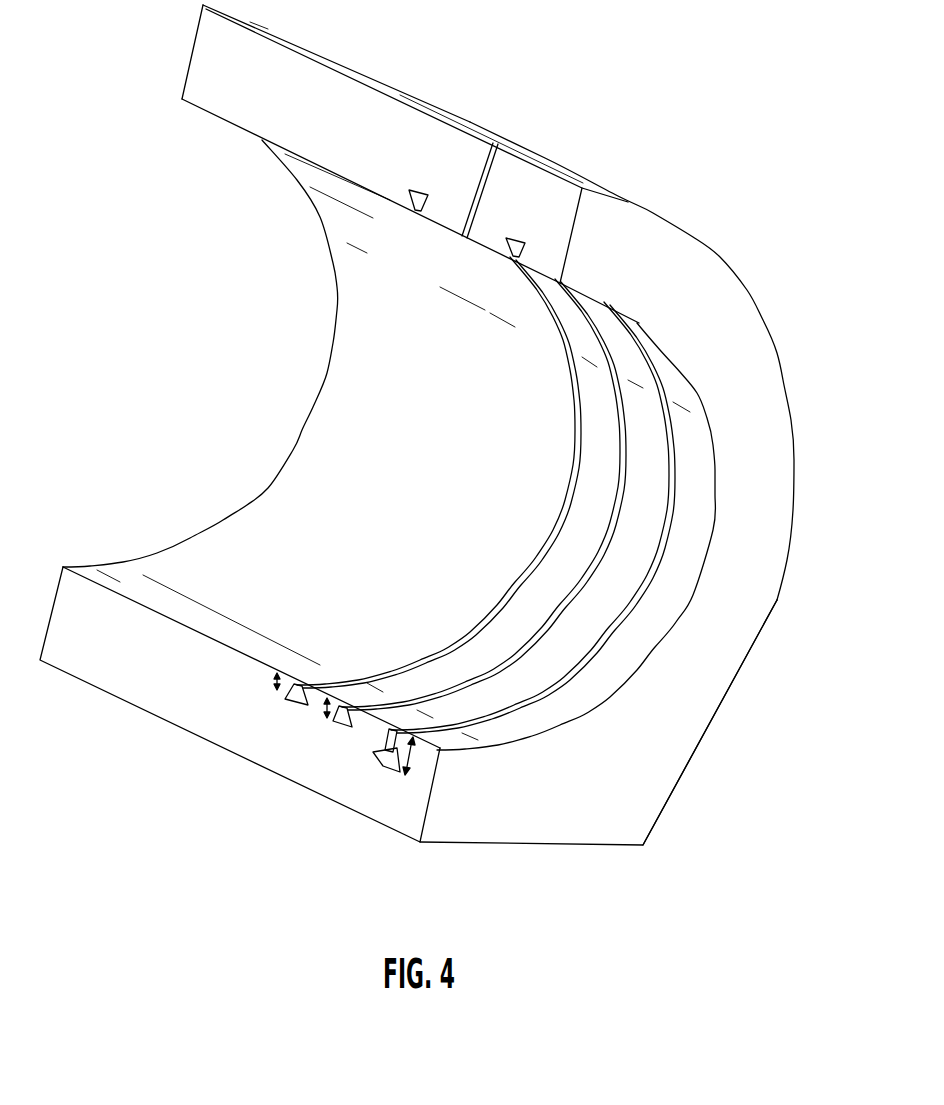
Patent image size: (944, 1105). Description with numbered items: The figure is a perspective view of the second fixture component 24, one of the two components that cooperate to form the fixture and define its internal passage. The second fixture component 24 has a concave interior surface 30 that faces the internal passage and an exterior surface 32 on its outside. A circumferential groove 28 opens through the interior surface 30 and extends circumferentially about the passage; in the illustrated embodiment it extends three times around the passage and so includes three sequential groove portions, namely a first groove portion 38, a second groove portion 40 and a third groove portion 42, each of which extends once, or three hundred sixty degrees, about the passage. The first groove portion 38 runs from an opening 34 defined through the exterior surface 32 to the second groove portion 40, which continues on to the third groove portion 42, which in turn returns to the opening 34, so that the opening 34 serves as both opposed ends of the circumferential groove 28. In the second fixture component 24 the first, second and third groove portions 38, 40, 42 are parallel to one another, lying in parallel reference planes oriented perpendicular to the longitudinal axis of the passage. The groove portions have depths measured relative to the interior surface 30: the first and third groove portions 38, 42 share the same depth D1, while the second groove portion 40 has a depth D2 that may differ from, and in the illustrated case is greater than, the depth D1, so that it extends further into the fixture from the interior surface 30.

The second fixture component 24 is at (788, 560).
The circumferential groove 28 is at (675, 450).
The interior surface 30 is at (688, 614).
The exterior surface 32 is at (376, 823).
The opening 34 is at (498, 143).
The first groove portion 38 is at (578, 667).
The second groove portion 40 is at (598, 298).
The third groove portion 42 is at (620, 388).
The depth of first and third groove portions D1 is at (322, 707).
The depth of second groove portion D2 is at (412, 757).